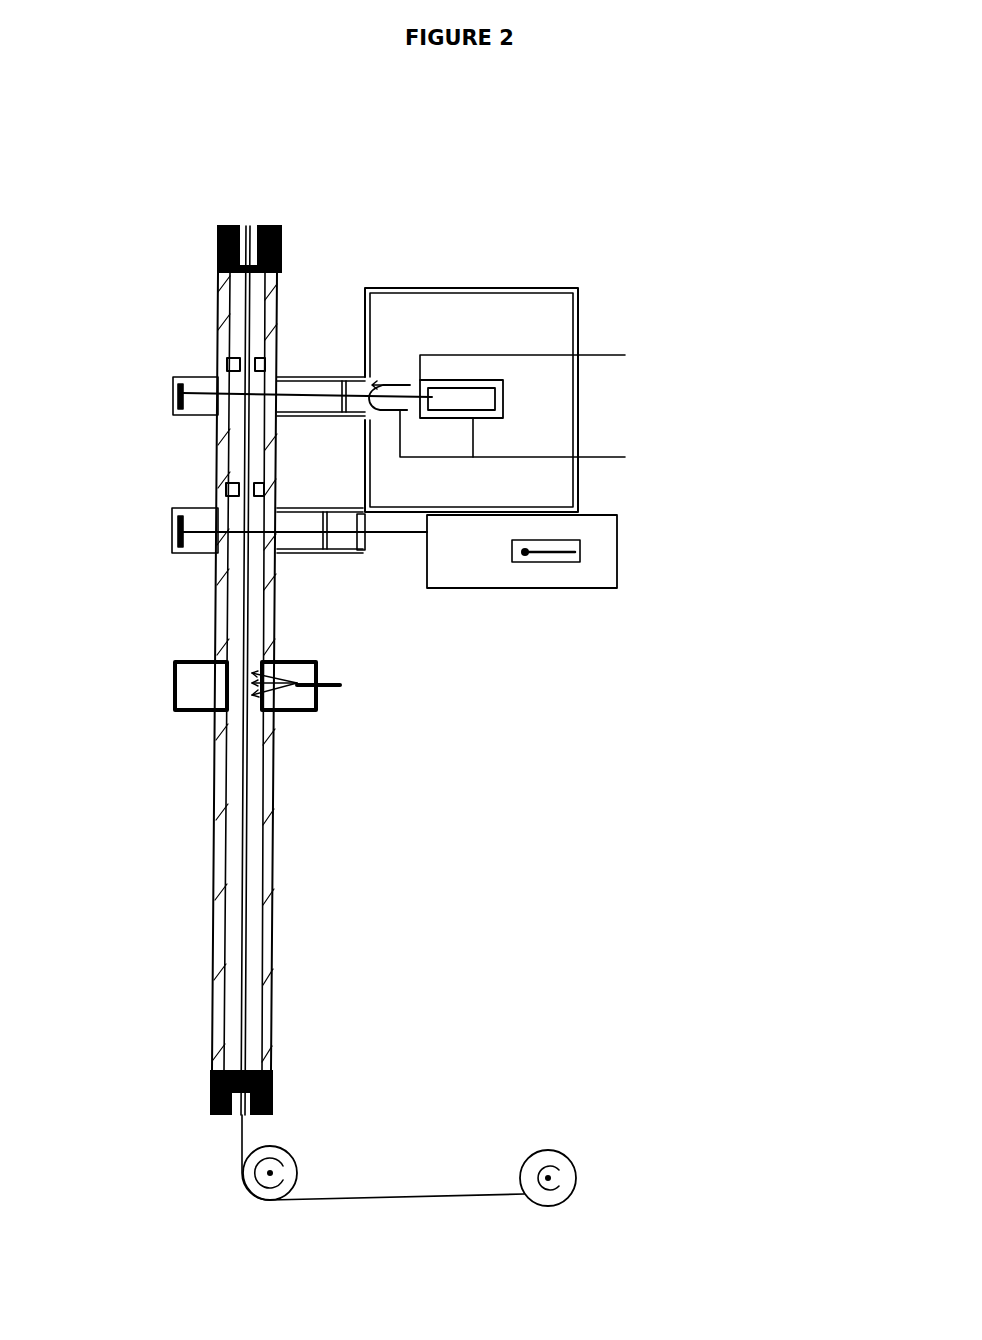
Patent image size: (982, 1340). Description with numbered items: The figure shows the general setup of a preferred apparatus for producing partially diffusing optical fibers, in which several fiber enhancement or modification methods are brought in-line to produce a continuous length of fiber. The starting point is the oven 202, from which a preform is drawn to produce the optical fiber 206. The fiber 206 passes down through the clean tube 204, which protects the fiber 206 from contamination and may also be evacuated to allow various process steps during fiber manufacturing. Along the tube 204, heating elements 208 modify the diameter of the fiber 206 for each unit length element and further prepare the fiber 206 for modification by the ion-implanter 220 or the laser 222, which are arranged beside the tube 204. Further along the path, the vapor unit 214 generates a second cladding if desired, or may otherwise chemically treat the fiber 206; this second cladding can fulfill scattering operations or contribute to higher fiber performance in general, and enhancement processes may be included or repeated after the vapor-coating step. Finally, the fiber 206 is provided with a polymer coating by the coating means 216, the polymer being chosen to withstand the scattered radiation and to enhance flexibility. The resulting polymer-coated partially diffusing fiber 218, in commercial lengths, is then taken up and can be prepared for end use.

The oven 202 is at (256, 226).
The clean tube 204 is at (217, 317).
The optical fiber 206 is at (253, 322).
The heating elements 208 is at (227, 366).
The vapor unit 214 is at (307, 675).
The coating means 216 is at (280, 1078).
The polymer-coated partially diffusing fiber 218 is at (590, 1158).
The ion-implanter 220 is at (483, 313).
The laser 222 is at (610, 560).